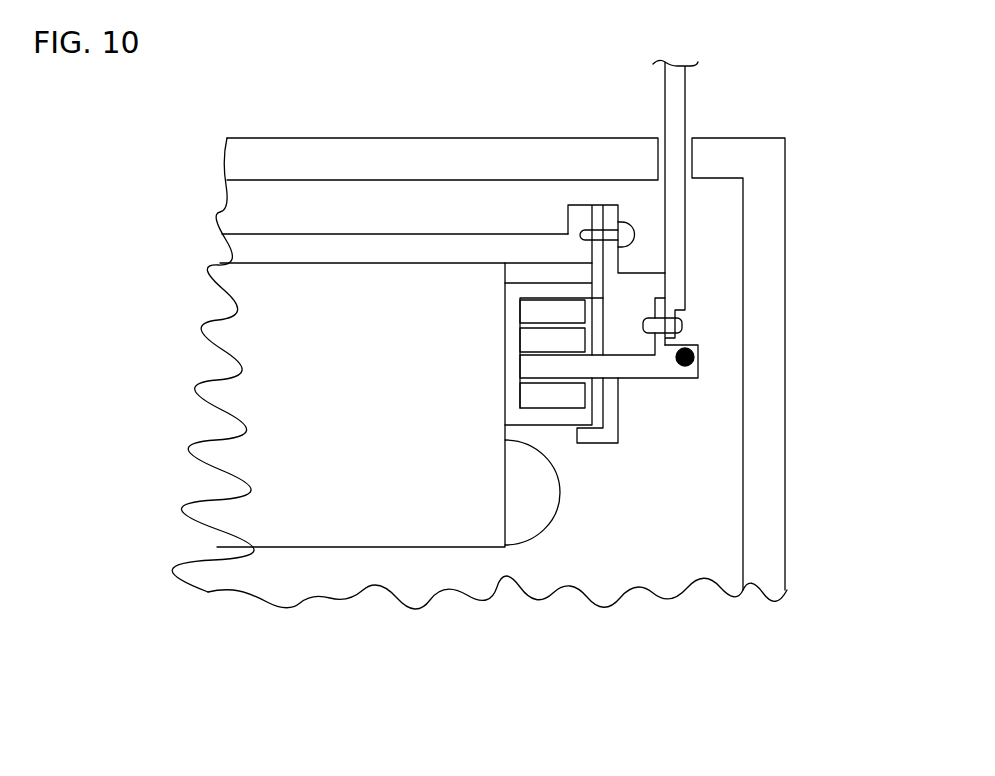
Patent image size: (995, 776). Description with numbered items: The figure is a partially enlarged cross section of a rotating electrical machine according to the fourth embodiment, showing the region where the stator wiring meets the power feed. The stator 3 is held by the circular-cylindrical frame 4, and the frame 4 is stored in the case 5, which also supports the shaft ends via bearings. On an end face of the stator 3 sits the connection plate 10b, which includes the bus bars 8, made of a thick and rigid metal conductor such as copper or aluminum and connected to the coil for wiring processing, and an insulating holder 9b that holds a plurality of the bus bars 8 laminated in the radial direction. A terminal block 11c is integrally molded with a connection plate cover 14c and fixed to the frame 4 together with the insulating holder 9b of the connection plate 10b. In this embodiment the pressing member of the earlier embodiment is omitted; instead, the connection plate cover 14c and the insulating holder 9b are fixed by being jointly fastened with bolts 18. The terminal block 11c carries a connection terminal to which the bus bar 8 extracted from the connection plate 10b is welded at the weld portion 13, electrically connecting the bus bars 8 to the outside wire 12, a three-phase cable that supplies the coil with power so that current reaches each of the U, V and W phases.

The stator 3 is at (327, 548).
The frame 4 is at (248, 234).
The case 5 is at (283, 138).
The bus bar 8 is at (530, 313).
The insulating holder 9b is at (517, 293).
The connection plate 10b is at (347, 358).
The terminal block 11c is at (645, 272).
The outside wire 12 is at (685, 100).
The weld portion 13 is at (700, 363).
The connection plate cover 14c is at (622, 410).
The bolt 18 is at (590, 232).